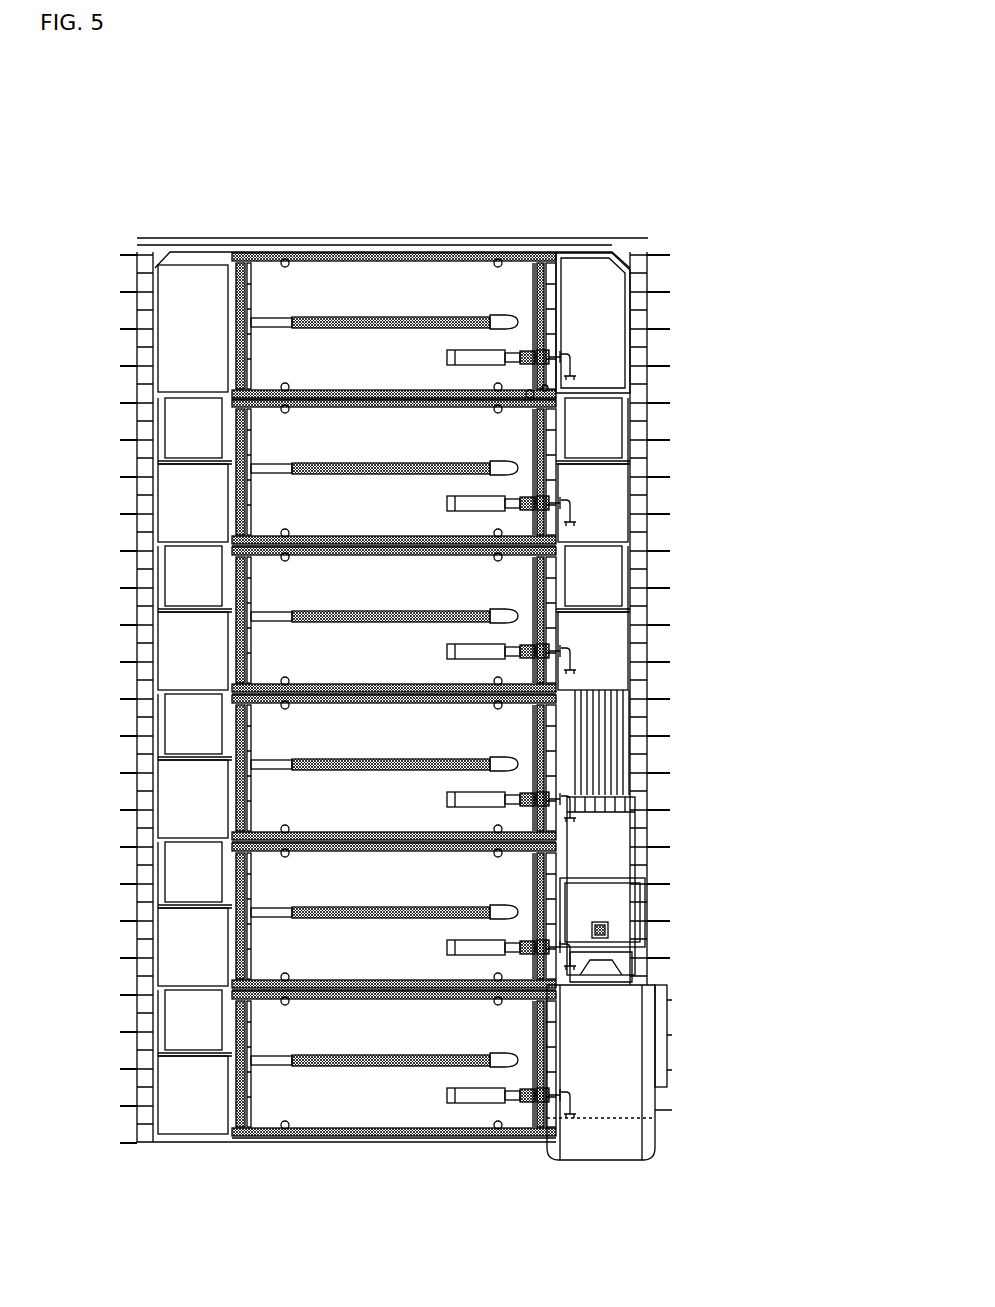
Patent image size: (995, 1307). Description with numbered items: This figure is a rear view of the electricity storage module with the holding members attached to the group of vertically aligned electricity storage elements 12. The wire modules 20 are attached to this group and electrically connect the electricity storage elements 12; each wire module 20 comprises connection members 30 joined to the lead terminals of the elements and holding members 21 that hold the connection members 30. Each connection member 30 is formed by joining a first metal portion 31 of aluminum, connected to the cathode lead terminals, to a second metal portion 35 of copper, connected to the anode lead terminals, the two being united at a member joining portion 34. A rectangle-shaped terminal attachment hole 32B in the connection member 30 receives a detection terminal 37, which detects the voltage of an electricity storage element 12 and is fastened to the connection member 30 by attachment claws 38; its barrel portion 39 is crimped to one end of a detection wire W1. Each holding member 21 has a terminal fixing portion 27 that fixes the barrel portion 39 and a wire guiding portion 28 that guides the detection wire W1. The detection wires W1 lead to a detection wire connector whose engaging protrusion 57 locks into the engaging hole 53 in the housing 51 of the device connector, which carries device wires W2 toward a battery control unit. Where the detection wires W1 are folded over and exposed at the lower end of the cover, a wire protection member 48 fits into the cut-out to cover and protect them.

The electricity storage element 12 is at (438, 250).
The wire module 20 is at (240, 262).
The holding member 21 is at (632, 268).
The terminal fixing portion 27 is at (545, 350).
The wire guiding portion 28 is at (565, 350).
The connection member 30 is at (298, 162).
The first metal portion 31 is at (352, 262).
The terminal attachment hole 32B is at (545, 386).
The member joining portion 34 is at (385, 318).
The second metal portion 35 is at (323, 345).
The detection terminal 37 is at (483, 300).
The attachment claw 38 is at (441, 352).
The barrel portion 39 is at (520, 300).
The wire protection member 48 is at (586, 1170).
The housing 51 is at (622, 832).
The engaging hole 53 is at (612, 932).
The engaging protrusion 57 is at (608, 925).
The detection wire W1 is at (578, 372).
The device wire W2 is at (628, 768).